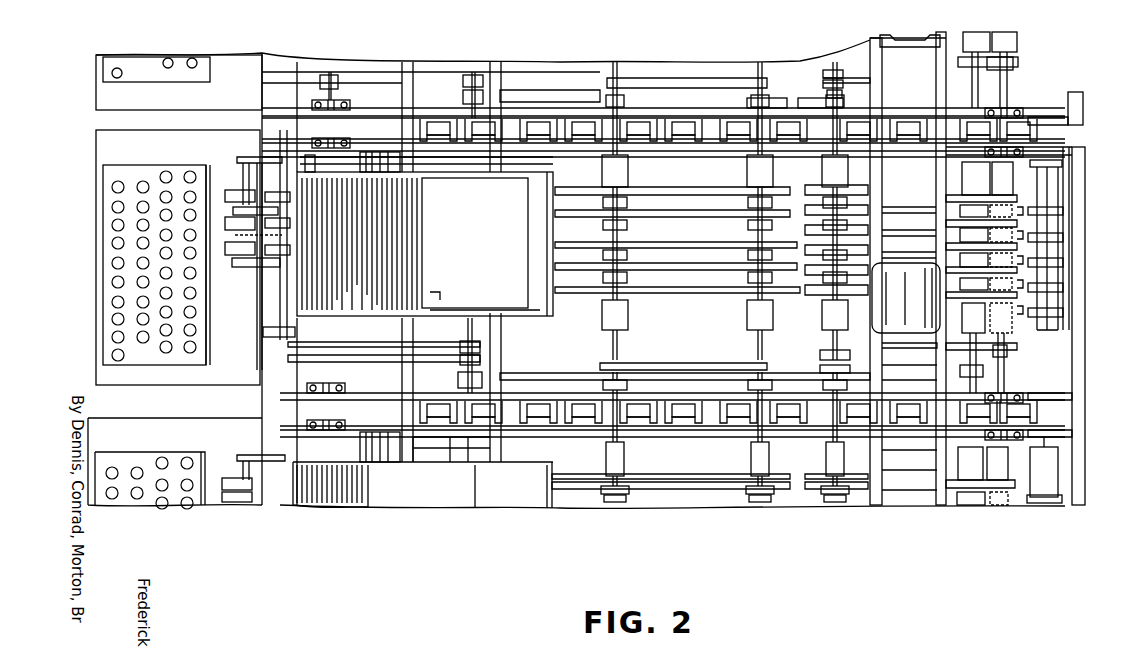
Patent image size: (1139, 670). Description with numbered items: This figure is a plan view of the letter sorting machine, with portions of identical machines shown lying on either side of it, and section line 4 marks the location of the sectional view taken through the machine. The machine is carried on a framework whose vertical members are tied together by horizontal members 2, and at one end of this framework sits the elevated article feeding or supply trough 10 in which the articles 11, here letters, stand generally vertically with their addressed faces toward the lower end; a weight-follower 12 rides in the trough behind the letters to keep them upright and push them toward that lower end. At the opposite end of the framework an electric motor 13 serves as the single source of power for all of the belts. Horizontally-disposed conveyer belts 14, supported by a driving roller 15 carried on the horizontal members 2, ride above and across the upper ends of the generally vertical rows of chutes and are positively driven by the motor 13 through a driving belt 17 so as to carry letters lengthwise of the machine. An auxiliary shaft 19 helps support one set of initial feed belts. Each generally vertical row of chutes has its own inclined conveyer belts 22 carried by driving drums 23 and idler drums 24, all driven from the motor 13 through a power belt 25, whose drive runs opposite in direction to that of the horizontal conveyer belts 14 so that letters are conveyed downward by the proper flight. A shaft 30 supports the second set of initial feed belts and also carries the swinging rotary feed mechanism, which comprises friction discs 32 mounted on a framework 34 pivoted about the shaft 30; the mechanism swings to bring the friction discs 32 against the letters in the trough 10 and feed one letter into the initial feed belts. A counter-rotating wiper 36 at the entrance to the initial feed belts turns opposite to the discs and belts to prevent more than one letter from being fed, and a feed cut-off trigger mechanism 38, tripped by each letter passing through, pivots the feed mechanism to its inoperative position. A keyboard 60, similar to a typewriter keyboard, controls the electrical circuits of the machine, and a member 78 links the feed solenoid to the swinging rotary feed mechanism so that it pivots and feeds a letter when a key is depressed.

The horizontal members 2 is at (1080, 124).
The section line 4 is at (90, 252).
The article feeding or supply trough 10 is at (520, 318).
The articles 11 is at (405, 208).
The weight-follower 12 is at (425, 226).
The electric motor 13 is at (898, 37).
The horizontally-disposed conveyer belts 14 is at (697, 272).
The driving roller 15 is at (1017, 43).
The driving belt 17 is at (990, 70).
The auxiliary shaft 19 is at (283, 298).
The conveyer belts 22 is at (745, 280).
The driving drums 23 is at (600, 322).
The idler drums 24 is at (1045, 185).
The power belt 25 is at (848, 70).
The shaft 30 is at (270, 322).
The friction discs 32 is at (238, 230).
The framework 34 is at (245, 158).
The counter-rotating wiper 36 is at (300, 330).
The feed cut-off trigger mechanism 38 is at (215, 245).
The keyboard 60 is at (90, 73).
The member 78 is at (262, 158).